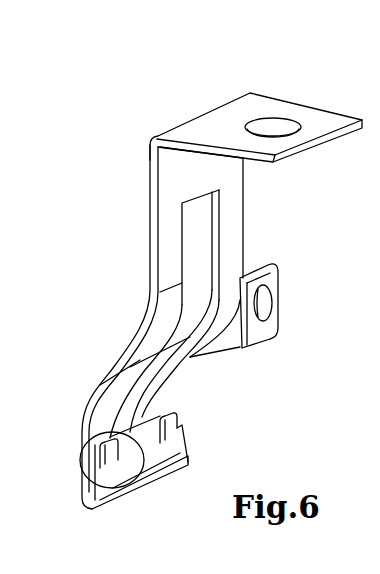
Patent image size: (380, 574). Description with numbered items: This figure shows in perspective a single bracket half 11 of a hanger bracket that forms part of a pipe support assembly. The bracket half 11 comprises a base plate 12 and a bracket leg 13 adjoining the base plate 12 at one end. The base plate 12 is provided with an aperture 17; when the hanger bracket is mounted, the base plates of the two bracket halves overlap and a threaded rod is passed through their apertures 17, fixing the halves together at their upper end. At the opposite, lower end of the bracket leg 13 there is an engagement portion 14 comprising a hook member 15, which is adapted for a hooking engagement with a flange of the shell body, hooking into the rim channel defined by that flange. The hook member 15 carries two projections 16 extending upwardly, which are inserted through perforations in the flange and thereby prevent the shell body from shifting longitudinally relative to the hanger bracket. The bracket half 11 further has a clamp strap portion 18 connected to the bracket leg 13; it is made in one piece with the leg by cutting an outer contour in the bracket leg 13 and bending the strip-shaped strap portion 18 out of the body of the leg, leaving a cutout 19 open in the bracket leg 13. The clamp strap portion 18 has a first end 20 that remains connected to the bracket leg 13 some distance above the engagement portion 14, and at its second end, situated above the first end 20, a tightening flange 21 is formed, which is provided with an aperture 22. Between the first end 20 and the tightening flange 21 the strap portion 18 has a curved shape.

The bracket half 11 is at (140, 175).
The base plate 12 is at (313, 119).
The bracket leg 13 is at (153, 303).
The engagement portion 14 is at (200, 448).
The hook member 15 is at (147, 490).
The projections 16 is at (110, 440).
The aperture 17 is at (275, 128).
The clamp strap portion 18 is at (212, 348).
The cutout 19 is at (193, 253).
The first end 20 is at (130, 420).
The tightening flange 21 is at (273, 270).
The aperture 22 is at (257, 303).